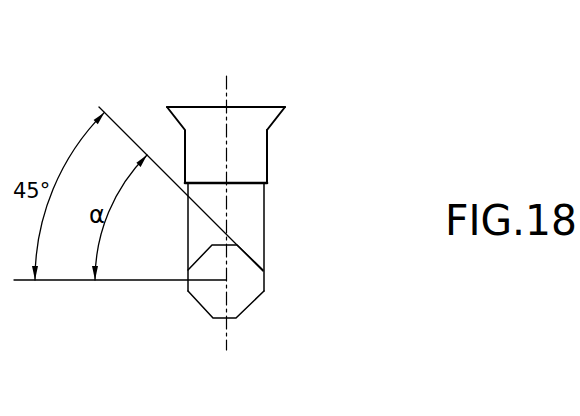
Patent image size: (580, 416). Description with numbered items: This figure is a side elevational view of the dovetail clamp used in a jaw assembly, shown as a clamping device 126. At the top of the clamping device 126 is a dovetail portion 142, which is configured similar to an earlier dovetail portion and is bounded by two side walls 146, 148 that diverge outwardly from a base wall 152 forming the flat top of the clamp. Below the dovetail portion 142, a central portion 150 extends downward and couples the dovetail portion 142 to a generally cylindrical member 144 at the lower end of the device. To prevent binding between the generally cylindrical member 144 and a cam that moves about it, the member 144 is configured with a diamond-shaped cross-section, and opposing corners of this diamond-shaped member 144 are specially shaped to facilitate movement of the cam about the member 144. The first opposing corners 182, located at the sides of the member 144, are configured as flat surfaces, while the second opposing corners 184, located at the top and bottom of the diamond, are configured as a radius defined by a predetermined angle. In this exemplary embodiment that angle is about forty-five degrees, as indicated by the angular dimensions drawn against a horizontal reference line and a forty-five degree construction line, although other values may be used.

The clamping device 126 is at (235, 192).
The dovetail portion 142 is at (232, 105).
The generally cylindrical member 144 is at (242, 296).
The side wall 146 is at (176, 118).
The side wall 148 is at (276, 120).
The central portion 150 is at (267, 165).
The base wall 152 is at (191, 106).
The first opposing corners 182 is at (264, 281).
The second opposing corners 184 is at (220, 245).